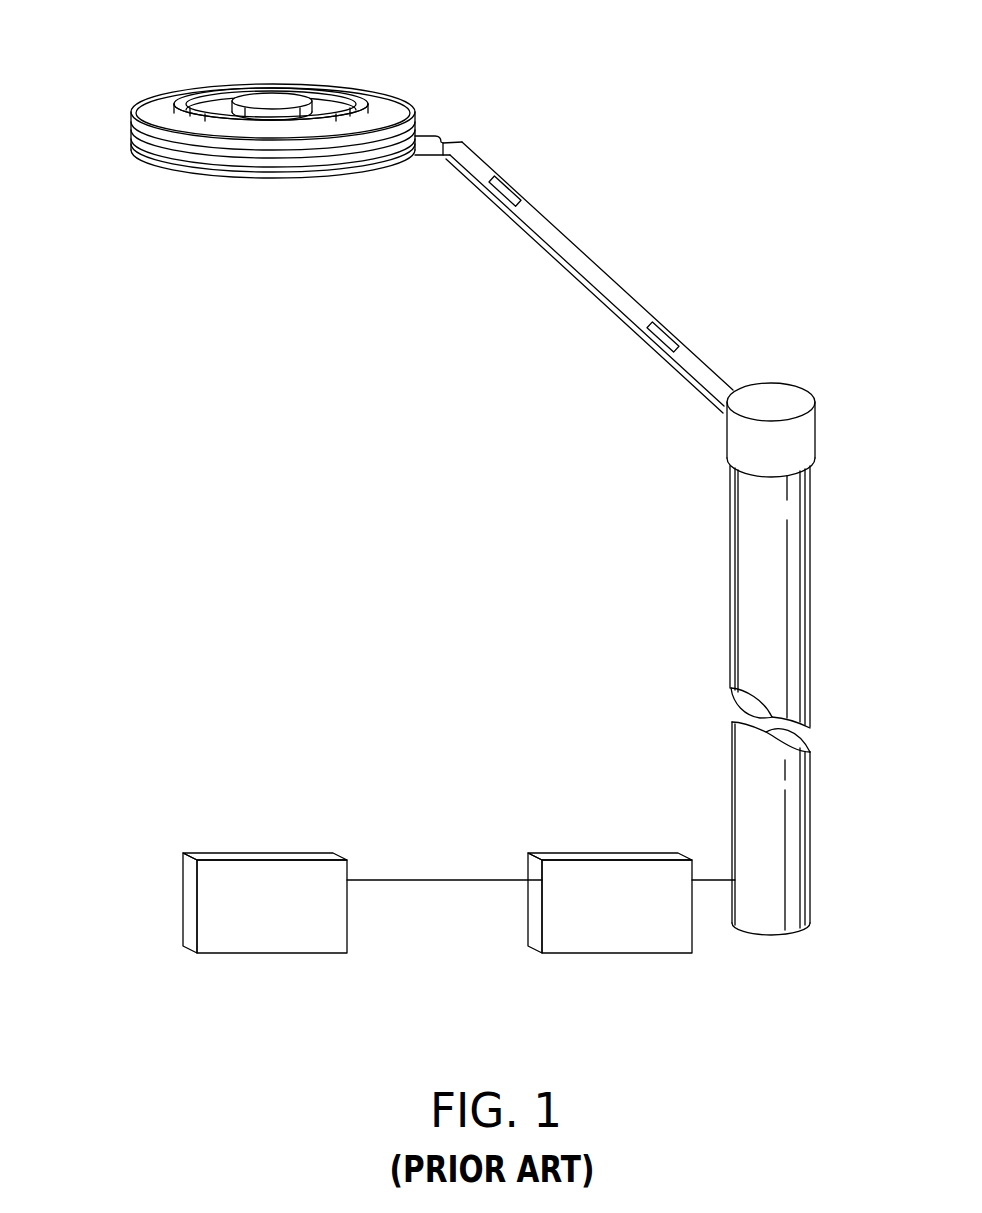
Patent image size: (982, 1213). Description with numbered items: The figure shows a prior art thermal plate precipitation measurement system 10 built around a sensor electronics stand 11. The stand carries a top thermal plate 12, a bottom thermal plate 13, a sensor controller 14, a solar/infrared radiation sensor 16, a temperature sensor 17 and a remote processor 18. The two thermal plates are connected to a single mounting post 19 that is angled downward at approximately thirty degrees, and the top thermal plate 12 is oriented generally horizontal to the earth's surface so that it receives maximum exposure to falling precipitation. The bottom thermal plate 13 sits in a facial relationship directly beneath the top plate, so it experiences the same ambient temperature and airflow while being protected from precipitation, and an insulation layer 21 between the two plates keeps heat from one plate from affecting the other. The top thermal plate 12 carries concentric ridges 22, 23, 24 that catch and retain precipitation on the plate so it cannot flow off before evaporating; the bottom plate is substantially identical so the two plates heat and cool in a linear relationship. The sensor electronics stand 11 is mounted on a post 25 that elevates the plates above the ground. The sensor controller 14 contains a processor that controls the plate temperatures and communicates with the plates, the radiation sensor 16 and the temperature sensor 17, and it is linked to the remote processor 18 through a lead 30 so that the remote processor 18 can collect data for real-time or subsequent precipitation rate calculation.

The thermal plate precipitation measurement system 10 is at (448, 51).
The sensor electronics stand 11 is at (101, 1031).
The top thermal plate 12 is at (378, 107).
The bottom thermal plate 13 is at (320, 177).
The sensor controller 14 is at (603, 955).
The solar/infrared radiation sensor 16 is at (513, 187).
The temperature sensor 17 is at (680, 338).
The remote processor 18 is at (280, 955).
The mounting post 19 is at (620, 298).
The insulation layer 21 is at (237, 160).
The concentric ridge 22 is at (165, 96).
The concentric ridge 23 is at (193, 92).
The concentric ridge 24 is at (258, 100).
The post 25 is at (803, 637).
The lead 30 is at (483, 878).